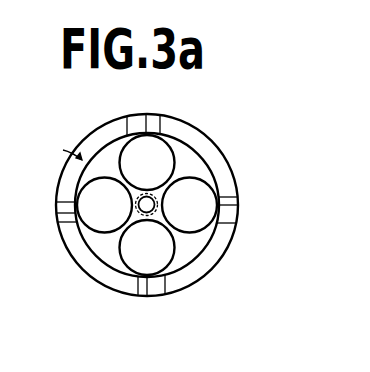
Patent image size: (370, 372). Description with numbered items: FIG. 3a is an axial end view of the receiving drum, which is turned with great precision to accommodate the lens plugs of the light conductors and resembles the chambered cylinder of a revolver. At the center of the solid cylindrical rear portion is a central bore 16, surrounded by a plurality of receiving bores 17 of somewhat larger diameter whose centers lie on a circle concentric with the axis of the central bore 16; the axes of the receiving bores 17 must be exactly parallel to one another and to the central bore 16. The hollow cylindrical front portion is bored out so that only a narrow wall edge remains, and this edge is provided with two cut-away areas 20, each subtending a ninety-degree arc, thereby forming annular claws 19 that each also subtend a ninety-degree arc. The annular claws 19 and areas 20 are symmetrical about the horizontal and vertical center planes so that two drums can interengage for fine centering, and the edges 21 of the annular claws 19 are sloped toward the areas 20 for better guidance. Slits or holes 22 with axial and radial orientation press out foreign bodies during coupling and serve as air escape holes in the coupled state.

The central bore 16 is at (139, 205).
The receiving bores 17 is at (168, 163).
The annular claws 19 is at (222, 184).
The cut-away areas 20 is at (104, 131).
The edges 21 is at (158, 131).
The slits or holes 22 is at (60, 151).